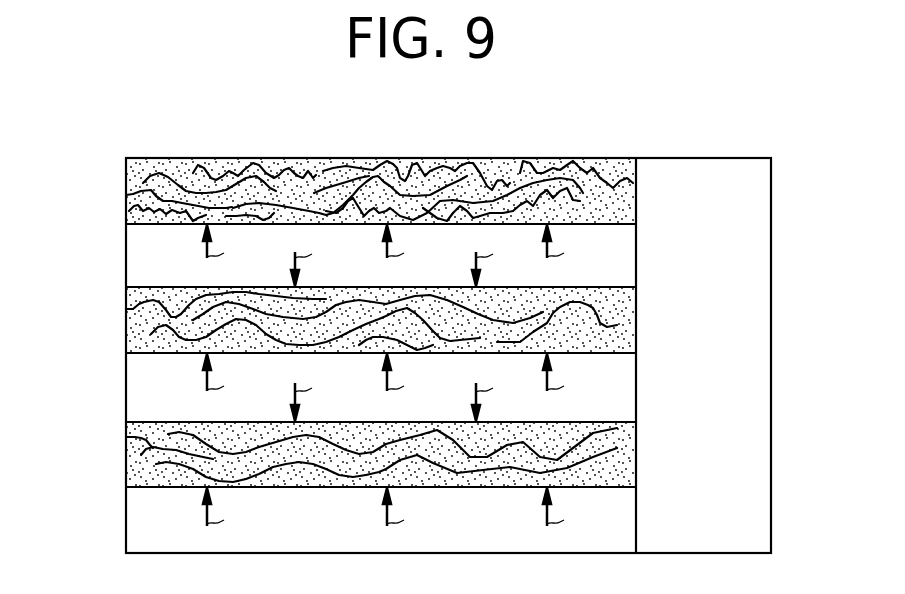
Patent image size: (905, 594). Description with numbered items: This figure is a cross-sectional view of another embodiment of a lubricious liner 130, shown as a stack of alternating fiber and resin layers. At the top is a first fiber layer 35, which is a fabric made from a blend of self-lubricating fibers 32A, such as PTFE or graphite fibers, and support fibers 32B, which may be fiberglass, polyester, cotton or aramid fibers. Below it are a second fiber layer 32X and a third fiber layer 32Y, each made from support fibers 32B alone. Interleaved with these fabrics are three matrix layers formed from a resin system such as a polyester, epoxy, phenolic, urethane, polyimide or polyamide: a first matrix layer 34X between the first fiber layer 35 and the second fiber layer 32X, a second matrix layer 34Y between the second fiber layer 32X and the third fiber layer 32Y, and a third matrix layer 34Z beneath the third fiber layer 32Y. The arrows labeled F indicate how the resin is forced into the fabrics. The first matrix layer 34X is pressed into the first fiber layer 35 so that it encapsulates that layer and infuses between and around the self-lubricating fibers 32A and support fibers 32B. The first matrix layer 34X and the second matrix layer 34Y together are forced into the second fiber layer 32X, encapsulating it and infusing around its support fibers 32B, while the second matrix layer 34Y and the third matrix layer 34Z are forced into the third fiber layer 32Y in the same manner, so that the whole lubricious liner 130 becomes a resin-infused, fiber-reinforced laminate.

The lubricious liner 130 is at (771, 308).
The first fiber layer 35 is at (636, 205).
The self-lubricating fibers 32A is at (126, 195).
The support fibers 32B is at (126, 168).
The first matrix layer 34X is at (636, 255).
The second fiber layer 32X is at (636, 318).
The second matrix layer 34Y is at (636, 390).
The third fiber layer 32Y is at (636, 453).
The third matrix layer 34Z is at (636, 517).